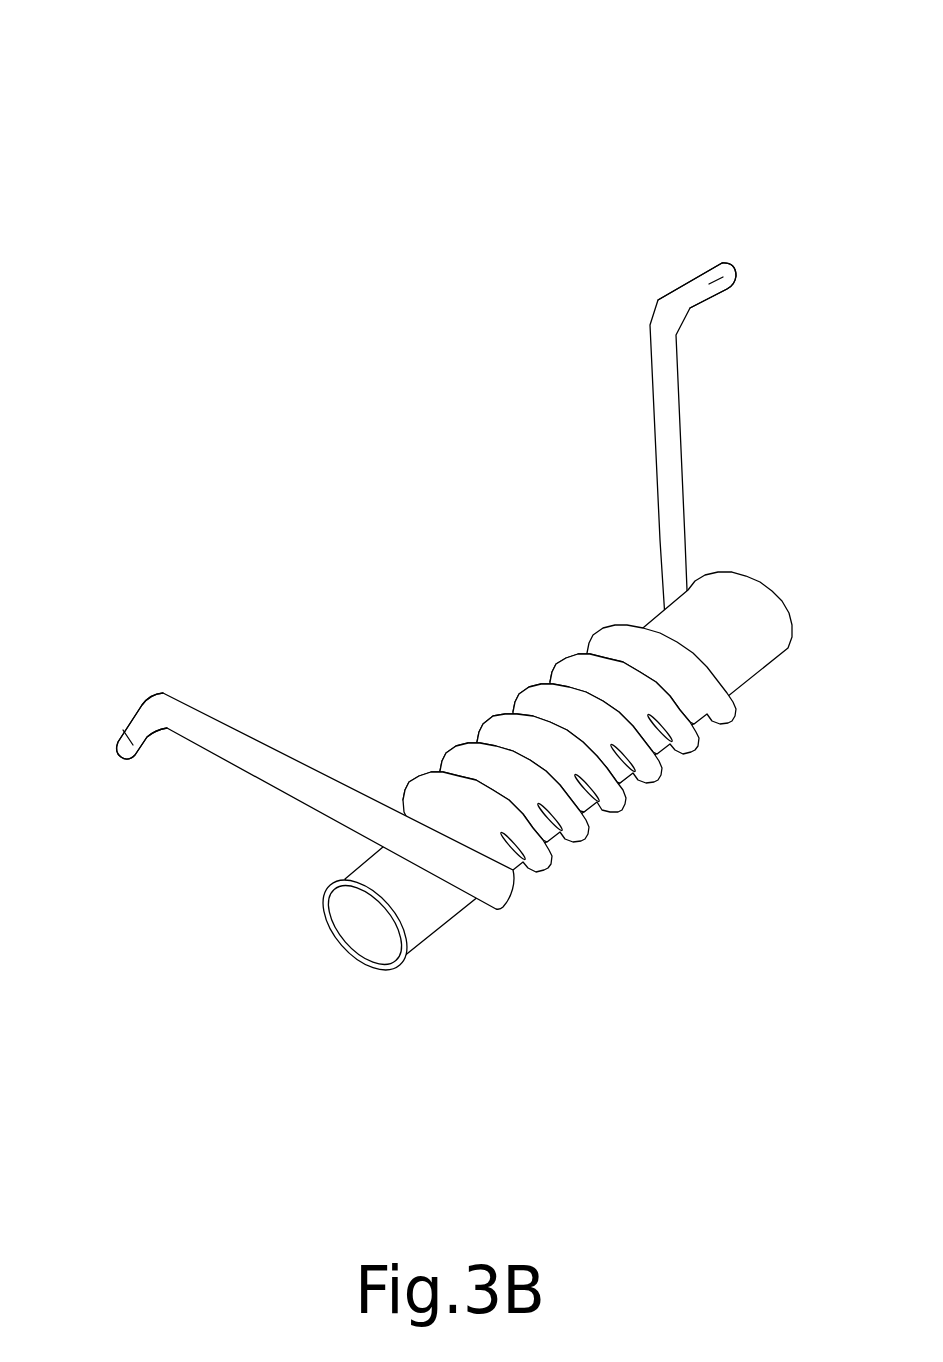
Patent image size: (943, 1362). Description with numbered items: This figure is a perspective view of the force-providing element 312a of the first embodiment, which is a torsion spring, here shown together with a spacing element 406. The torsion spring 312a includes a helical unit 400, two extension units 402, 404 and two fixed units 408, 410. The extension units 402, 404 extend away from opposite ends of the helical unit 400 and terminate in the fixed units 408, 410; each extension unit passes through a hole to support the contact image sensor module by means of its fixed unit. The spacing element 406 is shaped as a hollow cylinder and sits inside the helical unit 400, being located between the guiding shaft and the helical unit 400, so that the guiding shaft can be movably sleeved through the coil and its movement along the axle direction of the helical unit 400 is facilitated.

The force-providing element 312a is at (656, 134).
The helical unit 400 is at (535, 700).
The extension unit 402 is at (665, 382).
The extension unit 404 is at (228, 740).
The spacing element 406 is at (430, 900).
The fixed unit 408 is at (730, 270).
The fixed unit 410 is at (133, 745).